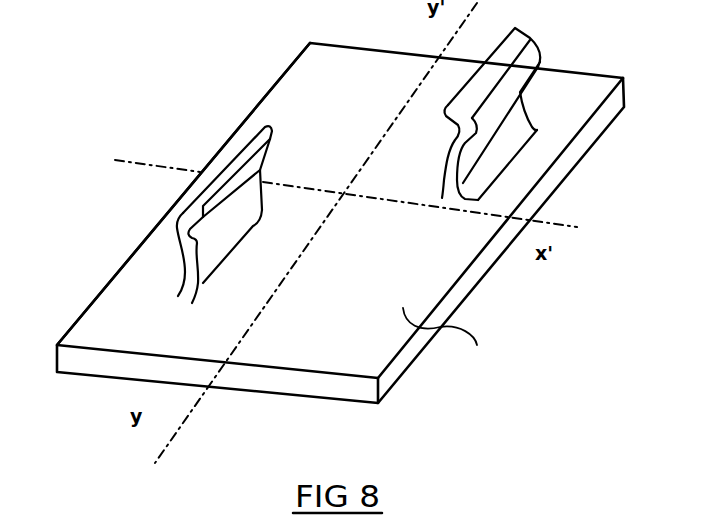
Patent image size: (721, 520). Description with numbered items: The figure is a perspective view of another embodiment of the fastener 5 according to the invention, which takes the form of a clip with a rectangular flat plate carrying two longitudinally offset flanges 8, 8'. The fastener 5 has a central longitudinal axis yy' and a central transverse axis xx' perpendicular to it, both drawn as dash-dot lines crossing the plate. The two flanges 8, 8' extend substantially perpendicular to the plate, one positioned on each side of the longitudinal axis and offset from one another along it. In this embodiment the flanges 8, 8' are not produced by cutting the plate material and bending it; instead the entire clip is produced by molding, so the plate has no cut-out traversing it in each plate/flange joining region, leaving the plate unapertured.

The fastener 5 is at (171, 105).
The flange 8 is at (156, 214).
The flange 8' is at (534, 118).